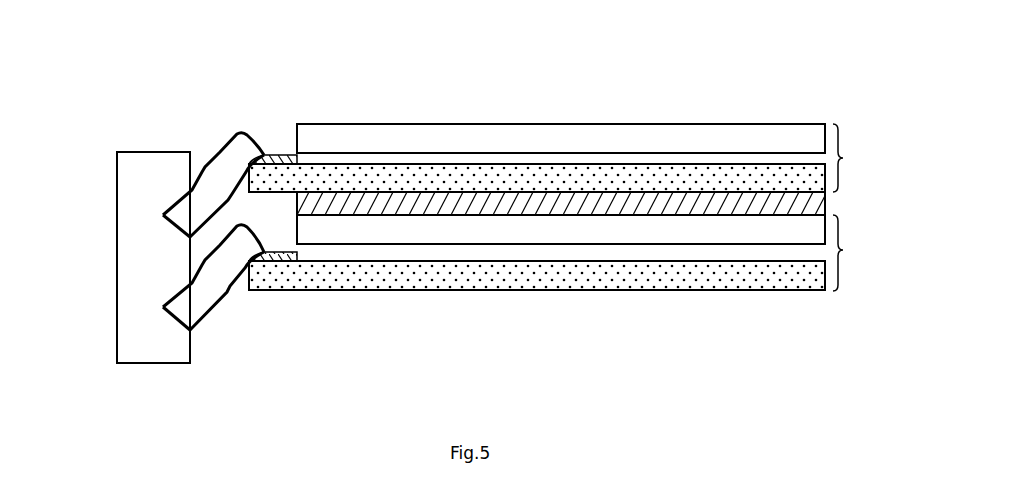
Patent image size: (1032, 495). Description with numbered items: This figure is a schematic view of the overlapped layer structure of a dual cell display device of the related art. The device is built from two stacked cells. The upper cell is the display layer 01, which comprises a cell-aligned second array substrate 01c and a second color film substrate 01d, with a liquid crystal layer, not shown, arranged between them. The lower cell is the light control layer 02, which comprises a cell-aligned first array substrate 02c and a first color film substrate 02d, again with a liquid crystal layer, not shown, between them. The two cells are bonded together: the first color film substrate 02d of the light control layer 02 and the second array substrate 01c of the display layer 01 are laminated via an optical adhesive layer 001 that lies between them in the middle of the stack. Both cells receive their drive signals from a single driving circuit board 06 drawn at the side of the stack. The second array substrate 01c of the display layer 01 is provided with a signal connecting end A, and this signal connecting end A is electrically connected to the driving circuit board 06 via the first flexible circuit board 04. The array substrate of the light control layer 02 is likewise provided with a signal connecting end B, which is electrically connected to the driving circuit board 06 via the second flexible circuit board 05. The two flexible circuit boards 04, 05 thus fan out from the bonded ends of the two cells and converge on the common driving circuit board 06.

The display layer 01 is at (568, 103).
The second array substrate 01c is at (643, 180).
The second color film substrate 01d is at (552, 138).
The light control layer 02 is at (569, 304).
The first array substrate 02c is at (640, 272).
The first color film substrate 02d is at (532, 223).
The optical adhesive layer 001 is at (384, 207).
The first flexible circuit board 04 is at (222, 163).
The second flexible circuit board 05 is at (207, 298).
The driving circuit board 06 is at (135, 278).
The signal connecting end A is at (279, 157).
The signal connecting end B is at (267, 250).